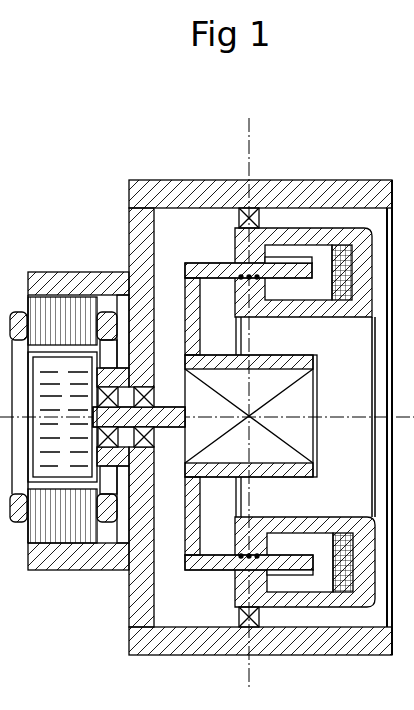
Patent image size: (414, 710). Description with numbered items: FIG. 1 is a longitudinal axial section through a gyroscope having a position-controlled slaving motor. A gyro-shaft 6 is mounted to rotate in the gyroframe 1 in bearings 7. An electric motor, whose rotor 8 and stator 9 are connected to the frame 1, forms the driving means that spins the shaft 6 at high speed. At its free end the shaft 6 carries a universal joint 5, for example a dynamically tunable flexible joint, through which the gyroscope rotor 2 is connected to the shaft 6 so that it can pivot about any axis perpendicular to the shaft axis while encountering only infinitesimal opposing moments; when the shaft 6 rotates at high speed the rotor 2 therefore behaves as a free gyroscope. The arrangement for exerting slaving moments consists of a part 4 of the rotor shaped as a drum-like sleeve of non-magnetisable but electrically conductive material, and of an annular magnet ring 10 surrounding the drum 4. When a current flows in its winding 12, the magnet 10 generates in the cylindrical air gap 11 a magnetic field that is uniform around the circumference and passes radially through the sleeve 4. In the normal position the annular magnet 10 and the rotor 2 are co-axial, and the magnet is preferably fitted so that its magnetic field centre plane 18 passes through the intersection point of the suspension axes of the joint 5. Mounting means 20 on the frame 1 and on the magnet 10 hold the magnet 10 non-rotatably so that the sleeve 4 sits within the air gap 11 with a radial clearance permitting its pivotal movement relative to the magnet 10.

The gyroframe 1 is at (185, 190).
The rotor 2 is at (185, 322).
The drum-shaped sleeve 4 is at (216, 268).
The universal joint 5 is at (306, 400).
The gyro-shaft 6 is at (168, 428).
The bearings 7 is at (140, 462).
The rotor of electric motor 8 is at (64, 449).
The stator 9 is at (66, 530).
The annular magnet ring 10 is at (352, 262).
The air gap 11 is at (290, 260).
The winding 12 is at (340, 245).
The magnetic field centre plane 18 is at (250, 140).
The mounting means 20 is at (255, 212).